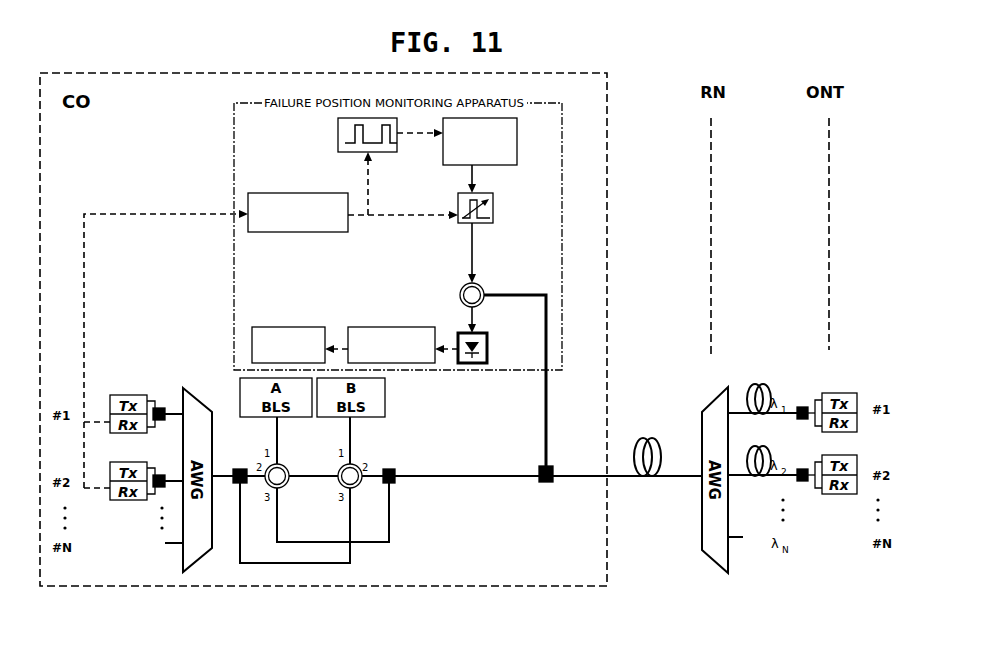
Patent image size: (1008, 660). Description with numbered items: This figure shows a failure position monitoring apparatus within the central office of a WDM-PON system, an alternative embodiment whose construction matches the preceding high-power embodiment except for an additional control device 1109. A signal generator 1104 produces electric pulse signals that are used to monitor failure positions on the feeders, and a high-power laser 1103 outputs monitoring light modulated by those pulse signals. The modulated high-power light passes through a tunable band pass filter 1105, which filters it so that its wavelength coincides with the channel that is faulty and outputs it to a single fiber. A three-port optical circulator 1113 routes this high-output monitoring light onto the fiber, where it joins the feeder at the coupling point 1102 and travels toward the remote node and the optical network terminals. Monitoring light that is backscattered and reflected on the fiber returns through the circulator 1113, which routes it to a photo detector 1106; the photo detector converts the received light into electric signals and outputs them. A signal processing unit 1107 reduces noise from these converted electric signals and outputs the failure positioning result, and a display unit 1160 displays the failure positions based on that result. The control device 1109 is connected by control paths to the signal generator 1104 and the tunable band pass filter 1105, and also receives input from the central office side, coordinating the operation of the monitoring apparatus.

The optical coupler / connection point of feeder fiber 1102 is at (538, 484).
The high-power laser 1103 is at (504, 156).
The signal generator 1104 is at (383, 152).
The tunable band pass filter 1105 is at (493, 216).
The photo detector 1106 is at (487, 346).
The signal processing unit 1107 is at (378, 327).
The control device 1109 is at (322, 232).
The three-port optical circulator 1113 is at (481, 288).
The display unit 1160 is at (282, 327).